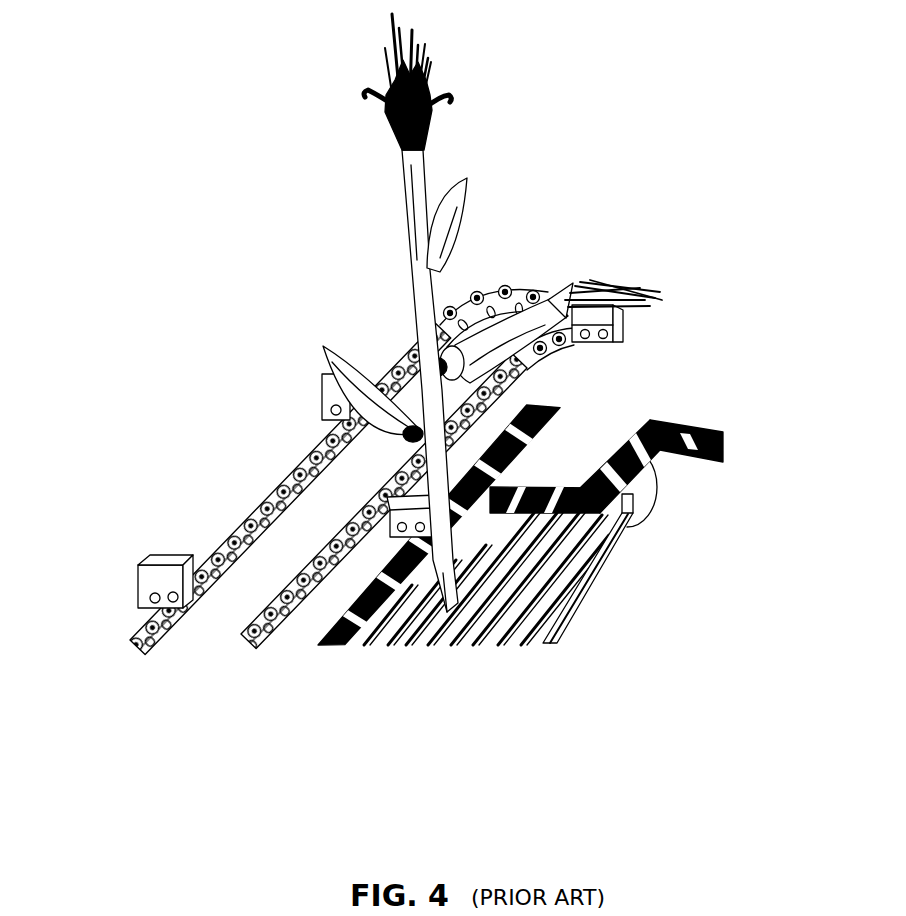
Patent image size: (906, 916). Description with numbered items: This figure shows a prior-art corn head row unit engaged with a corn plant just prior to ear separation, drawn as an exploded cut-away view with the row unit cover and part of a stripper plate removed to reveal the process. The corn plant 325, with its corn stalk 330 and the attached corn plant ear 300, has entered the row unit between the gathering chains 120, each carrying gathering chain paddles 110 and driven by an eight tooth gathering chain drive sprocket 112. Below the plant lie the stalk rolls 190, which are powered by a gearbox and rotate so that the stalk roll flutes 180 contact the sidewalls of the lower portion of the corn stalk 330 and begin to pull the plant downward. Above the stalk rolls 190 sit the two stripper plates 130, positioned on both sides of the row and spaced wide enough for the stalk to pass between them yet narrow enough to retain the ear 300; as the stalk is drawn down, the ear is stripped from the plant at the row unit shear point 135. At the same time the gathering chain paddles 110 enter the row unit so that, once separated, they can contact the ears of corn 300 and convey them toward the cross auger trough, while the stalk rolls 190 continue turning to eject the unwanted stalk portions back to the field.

The gathering chain paddles 110 is at (157, 582).
The 8 tooth gathering chain drive sprocket 112 is at (514, 283).
The gathering chain 120 is at (147, 652).
The stripper plates 130 is at (555, 482).
The row unit shear point 135 is at (560, 408).
The stalk roll flutes 180 is at (505, 634).
The stalk rolls 190 is at (633, 496).
The corn plant ear 300 is at (545, 300).
The corn stalk 325 is at (402, 188).
The corn stalk 330 is at (435, 445).